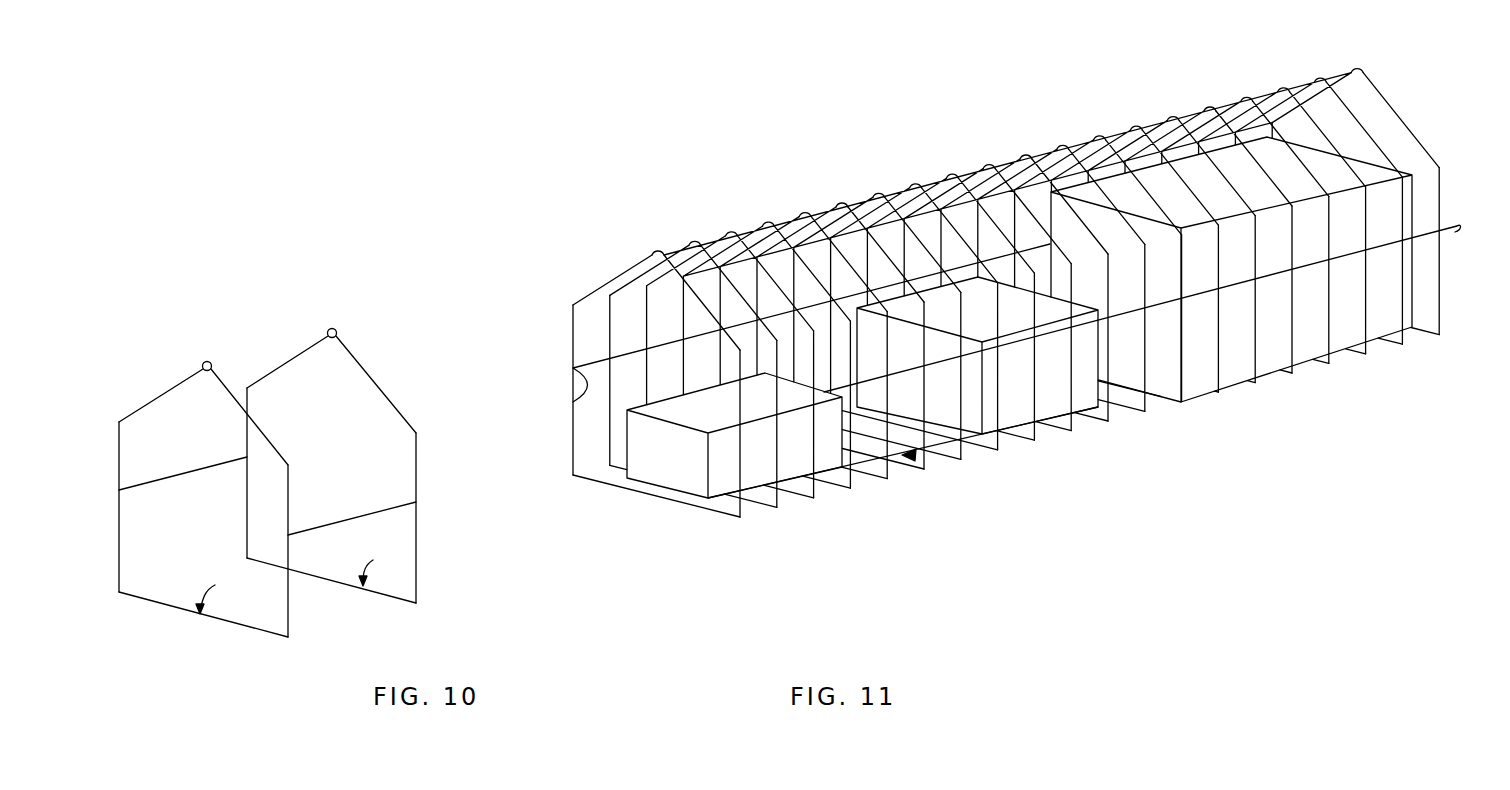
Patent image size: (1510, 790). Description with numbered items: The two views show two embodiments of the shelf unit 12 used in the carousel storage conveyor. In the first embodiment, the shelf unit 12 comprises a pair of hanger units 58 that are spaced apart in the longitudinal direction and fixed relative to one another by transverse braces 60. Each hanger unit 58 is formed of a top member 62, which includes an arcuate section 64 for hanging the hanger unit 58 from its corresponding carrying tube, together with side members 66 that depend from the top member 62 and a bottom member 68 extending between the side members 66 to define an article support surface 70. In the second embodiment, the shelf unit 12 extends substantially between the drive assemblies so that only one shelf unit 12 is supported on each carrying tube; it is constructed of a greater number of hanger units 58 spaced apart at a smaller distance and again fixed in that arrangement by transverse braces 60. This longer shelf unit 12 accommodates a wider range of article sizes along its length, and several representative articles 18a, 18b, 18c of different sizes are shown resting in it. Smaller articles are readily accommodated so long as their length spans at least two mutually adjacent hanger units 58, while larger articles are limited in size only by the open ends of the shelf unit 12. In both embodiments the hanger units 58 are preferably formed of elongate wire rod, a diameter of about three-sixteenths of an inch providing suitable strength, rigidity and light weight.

In FIG. 10, the shelf unit 12 is at (310, 495).
In FIG. 10, the hanger unit 58 is at (310, 495).
In FIG. 11, the hanger unit 58 is at (1005, 322).
In FIG. 10, the transverse brace 60 is at (148, 480).
In FIG. 11, the transverse brace 60 is at (572, 405).
In FIG. 10, the top member 62 is at (160, 397).
In FIG. 11, the top member 62 is at (712, 238).
In FIG. 10, the arcuate section 64 is at (208, 362).
In FIG. 11, the arcuate section 64 is at (655, 247).
In FIG. 10, the side member 66 is at (243, 398).
In FIG. 11, the side member 66 is at (572, 350).
In FIG. 10, the bottom member 68 is at (233, 623).
In FIG. 11, the bottom member 68 is at (588, 475).
In FIG. 10, the article support surface 70 is at (300, 575).
In FIG. 11, the article support surface 70 is at (923, 460).
In FIG. 11, the article 18a is at (792, 458).
In FIG. 11, the article 18b is at (1045, 405).
In FIG. 11, the article 18c is at (1298, 343).